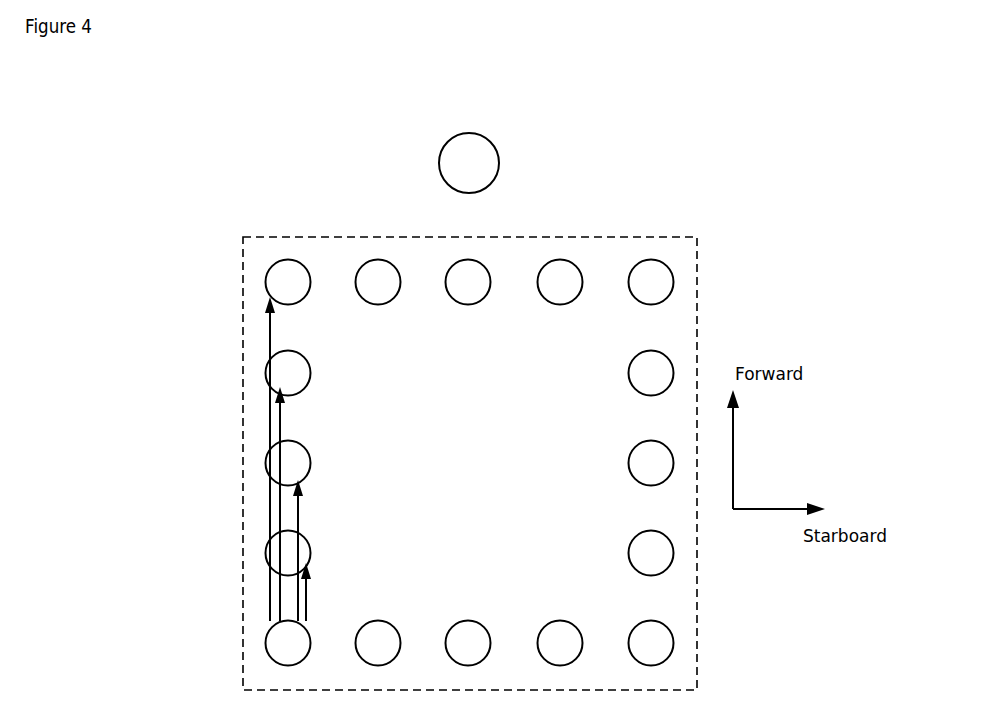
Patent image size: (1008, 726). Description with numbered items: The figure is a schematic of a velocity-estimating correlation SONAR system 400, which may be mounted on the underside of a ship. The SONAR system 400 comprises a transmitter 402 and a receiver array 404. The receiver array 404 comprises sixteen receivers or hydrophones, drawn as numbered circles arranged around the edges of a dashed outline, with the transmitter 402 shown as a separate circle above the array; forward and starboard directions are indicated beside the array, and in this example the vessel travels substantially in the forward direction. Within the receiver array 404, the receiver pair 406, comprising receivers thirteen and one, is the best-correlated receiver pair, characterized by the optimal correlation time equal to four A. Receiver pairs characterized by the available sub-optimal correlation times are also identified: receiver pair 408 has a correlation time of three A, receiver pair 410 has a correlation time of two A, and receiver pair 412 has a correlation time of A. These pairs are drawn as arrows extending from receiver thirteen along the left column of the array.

The SONAR system 400 is at (280, 125).
The transmitter 402 is at (483, 177).
The receiver array 404 is at (697, 617).
The receiver pair 406 is at (270, 335).
The receiver pair 408 is at (285, 427).
The receiver pair 410 is at (298, 525).
The receiver pair 412 is at (306, 603).